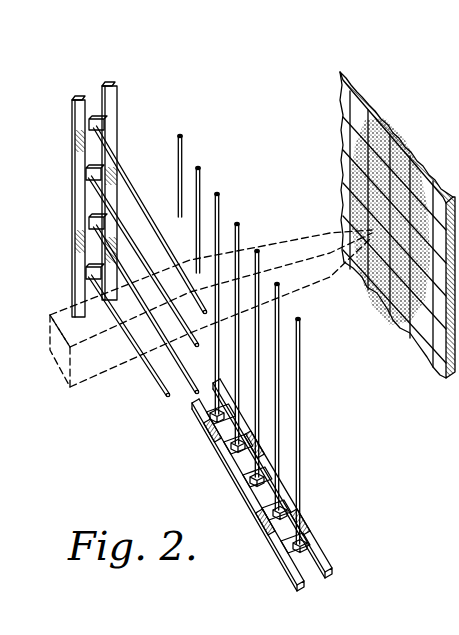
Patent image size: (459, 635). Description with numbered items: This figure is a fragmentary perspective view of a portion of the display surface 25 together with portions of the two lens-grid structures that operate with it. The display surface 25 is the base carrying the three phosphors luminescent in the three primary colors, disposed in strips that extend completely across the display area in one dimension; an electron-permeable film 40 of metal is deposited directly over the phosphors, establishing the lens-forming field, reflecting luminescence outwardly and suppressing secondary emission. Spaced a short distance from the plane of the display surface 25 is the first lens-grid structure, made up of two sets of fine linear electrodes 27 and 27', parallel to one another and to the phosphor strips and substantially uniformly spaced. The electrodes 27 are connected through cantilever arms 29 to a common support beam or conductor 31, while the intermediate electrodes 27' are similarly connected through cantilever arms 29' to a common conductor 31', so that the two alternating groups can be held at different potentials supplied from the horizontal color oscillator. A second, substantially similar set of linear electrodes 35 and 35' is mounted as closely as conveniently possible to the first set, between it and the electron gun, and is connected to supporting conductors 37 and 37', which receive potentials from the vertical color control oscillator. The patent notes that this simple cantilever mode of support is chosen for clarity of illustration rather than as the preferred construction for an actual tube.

The display surface 25 is at (368, 92).
The linear electrode 27 is at (222, 263).
The intermediate linear electrode 27' is at (243, 295).
The cantilever arm 29 is at (194, 433).
The cantilever arm 29' is at (219, 475).
The common support beam or conductor 31 is at (248, 495).
The common conductor 31' is at (291, 478).
The linear electrode 35 is at (150, 220).
The linear electrode 35' is at (144, 260).
The supporting conductor 37 is at (121, 185).
The supporting conductor 37' is at (65, 188).
The film of metal 40 is at (392, 320).